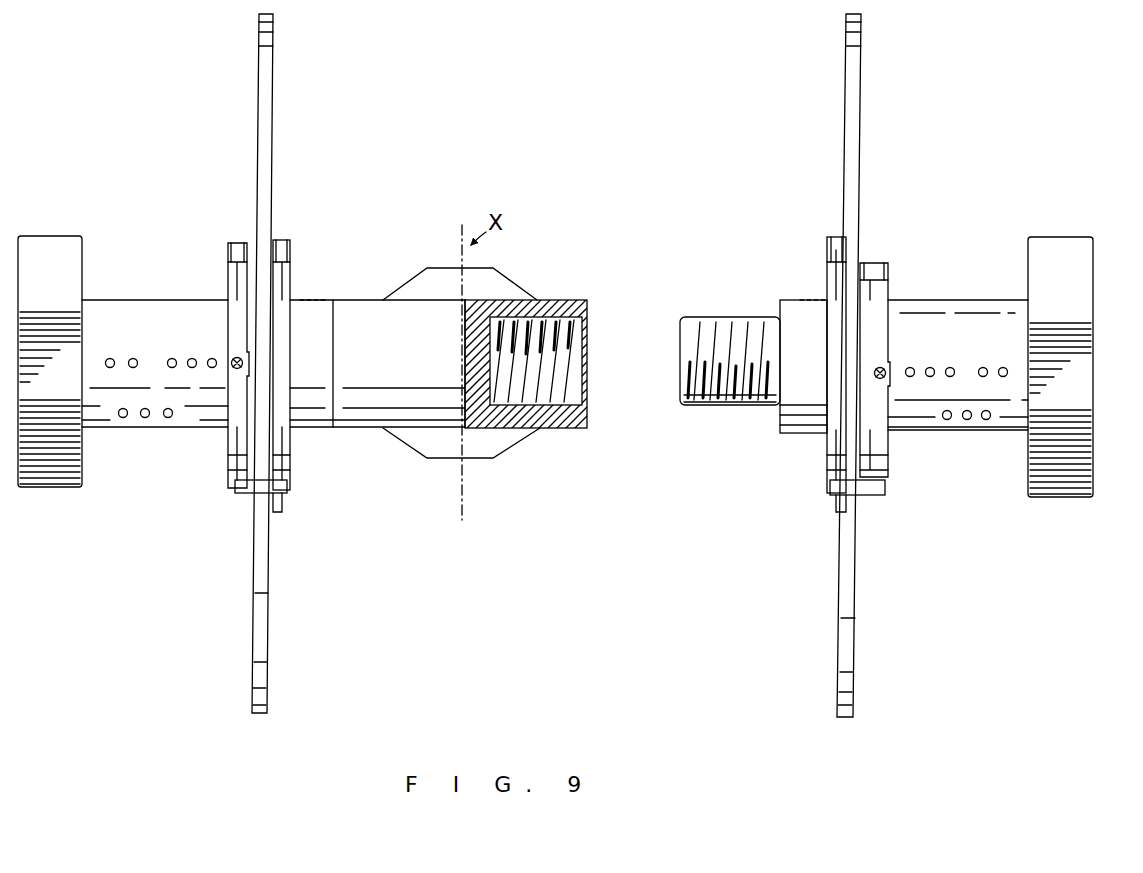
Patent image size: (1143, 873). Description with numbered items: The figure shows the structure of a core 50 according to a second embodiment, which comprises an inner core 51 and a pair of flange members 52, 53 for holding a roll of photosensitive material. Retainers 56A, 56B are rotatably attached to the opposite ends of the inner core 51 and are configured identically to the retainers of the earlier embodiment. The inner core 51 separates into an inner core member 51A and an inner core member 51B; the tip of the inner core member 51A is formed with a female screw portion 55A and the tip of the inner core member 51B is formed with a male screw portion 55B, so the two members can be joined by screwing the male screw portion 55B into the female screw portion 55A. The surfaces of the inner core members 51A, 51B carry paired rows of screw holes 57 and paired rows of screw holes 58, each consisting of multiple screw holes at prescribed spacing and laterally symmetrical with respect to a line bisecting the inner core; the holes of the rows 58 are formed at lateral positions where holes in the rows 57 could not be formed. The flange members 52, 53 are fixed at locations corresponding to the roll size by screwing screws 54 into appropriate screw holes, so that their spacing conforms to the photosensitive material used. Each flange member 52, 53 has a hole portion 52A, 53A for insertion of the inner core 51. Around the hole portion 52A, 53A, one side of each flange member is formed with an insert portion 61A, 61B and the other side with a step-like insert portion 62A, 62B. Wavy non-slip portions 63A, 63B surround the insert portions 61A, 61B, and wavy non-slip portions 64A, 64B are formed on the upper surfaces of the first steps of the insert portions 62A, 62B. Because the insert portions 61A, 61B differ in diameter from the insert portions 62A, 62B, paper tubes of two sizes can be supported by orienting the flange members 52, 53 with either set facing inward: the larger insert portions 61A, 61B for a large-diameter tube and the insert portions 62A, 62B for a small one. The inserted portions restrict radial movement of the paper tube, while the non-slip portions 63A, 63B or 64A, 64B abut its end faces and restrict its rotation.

The core 50 is at (514, 80).
The inner core 51 is at (380, 430).
The inner core member 51A is at (360, 305).
The inner core member 51B is at (948, 313).
The flange member 52 is at (262, 44).
The hole portion 52A is at (278, 300).
The flange member 53 is at (866, 44).
The hole portion 53A is at (818, 302).
The screw 54 is at (233, 358).
The female screw portion 55A is at (585, 306).
The male screw portion 55B is at (706, 325).
The retainer 56A is at (50, 242).
The retainer 56B is at (1072, 242).
The row of screw holes 57 is at (140, 345).
The row of screw holes 58 is at (178, 430).
The insert portion 61A is at (280, 243).
The insert portion 61B is at (830, 242).
The step-like insert portion 62A is at (232, 250).
The step-like insert portion 62B is at (884, 262).
The wavy non-slip portion 63A is at (283, 240).
The wavy non-slip portion 63B is at (838, 238).
The wavy non-slip portion 64A is at (240, 245).
The wavy non-slip portion 64B is at (878, 262).